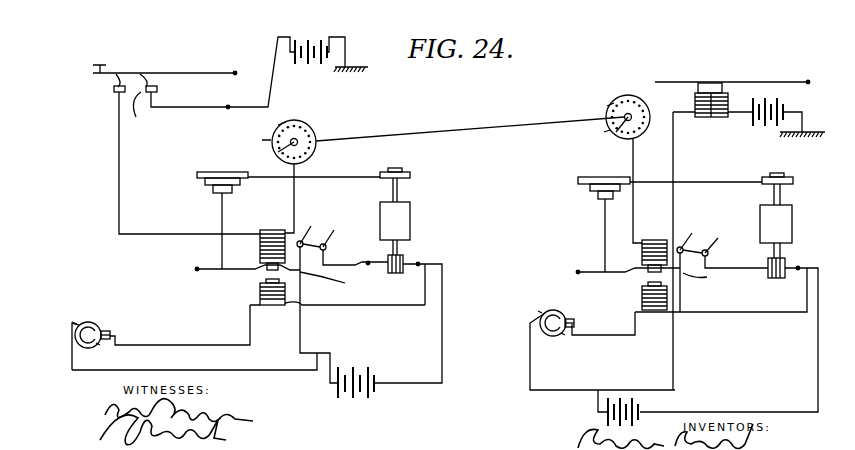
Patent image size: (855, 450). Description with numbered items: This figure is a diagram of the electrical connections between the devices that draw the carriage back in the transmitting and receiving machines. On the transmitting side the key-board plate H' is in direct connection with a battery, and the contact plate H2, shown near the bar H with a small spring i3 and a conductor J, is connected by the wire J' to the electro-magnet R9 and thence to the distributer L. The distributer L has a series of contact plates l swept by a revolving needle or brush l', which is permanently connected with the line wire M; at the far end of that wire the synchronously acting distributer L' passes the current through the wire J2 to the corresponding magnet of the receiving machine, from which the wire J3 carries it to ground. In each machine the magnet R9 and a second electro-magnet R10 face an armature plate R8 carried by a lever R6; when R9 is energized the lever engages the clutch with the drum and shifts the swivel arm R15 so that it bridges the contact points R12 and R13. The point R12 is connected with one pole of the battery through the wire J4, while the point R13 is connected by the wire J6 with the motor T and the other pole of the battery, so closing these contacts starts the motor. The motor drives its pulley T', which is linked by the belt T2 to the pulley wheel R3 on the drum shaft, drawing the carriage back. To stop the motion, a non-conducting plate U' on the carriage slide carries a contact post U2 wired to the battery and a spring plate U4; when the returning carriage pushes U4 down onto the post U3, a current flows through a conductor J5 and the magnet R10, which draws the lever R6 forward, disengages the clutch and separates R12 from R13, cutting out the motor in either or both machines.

The key-board contact plate H is at (165, 76).
The plate H' is at (161, 95).
The contact plate H2 is at (113, 90).
The spring i3 is at (136, 111).
The conductor J is at (259, 73).
The wire J' is at (189, 163).
The wire J2 is at (640, 191).
The wire J3 is at (740, 235).
The wire J4 is at (383, 362).
The conductor J5 is at (435, 304).
The wire J6 is at (570, 336).
The distributer L is at (294, 167).
The distributer L' is at (628, 106).
The contact plate l is at (440, 110).
The revolving needle or brush l' is at (429, 136).
The wire M is at (470, 137).
The pulley wheel R3 is at (413, 212).
The lever R6 is at (300, 289).
The armature plate R8 is at (632, 272).
The electro-magnet R9 is at (449, 251).
The electro-magnet R10 is at (260, 296).
The contact point R12 is at (508, 298).
The contact point R13 is at (532, 241).
The swivel arm R15 is at (513, 279).
The electric motor T is at (592, 240).
The pulley T' is at (594, 186).
The belt T2 is at (505, 168).
The plate U' is at (324, 317).
The contact post U2 is at (77, 325).
The contact post U3 is at (112, 331).
The spring plate U4 is at (100, 345).